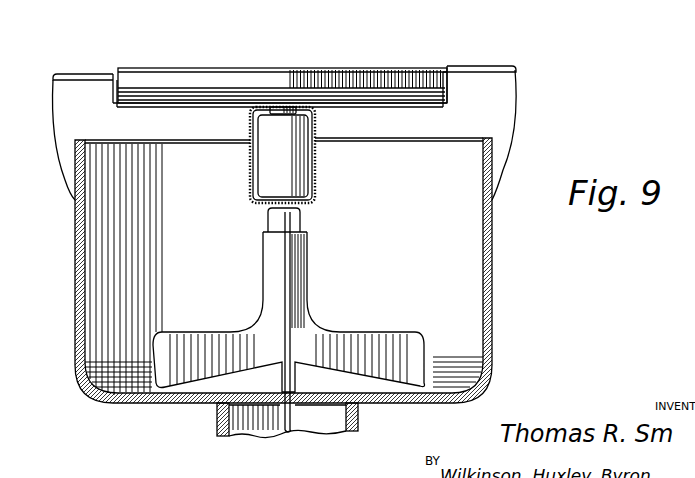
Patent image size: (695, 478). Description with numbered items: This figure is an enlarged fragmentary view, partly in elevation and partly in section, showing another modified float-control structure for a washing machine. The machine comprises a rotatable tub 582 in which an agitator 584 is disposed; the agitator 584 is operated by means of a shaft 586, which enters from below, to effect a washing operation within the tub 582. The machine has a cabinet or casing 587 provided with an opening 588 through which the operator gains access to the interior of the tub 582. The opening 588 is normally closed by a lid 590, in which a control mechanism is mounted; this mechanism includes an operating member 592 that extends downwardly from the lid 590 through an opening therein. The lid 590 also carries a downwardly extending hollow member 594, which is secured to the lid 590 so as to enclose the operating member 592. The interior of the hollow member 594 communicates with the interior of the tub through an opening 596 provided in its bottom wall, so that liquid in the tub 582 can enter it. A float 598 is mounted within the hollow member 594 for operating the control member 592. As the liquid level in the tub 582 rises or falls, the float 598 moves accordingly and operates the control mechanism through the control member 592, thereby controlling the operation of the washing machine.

The rotatable tub 582 is at (492, 293).
The agitator 584 is at (293, 284).
The shaft 586 is at (283, 427).
The cabinet or casing 587 is at (487, 47).
The opening 588 is at (112, 78).
The lid 590 is at (187, 76).
The operating member 592 is at (283, 112).
The hollow member 594 is at (316, 155).
The opening 596 is at (302, 208).
The float 598 is at (265, 167).